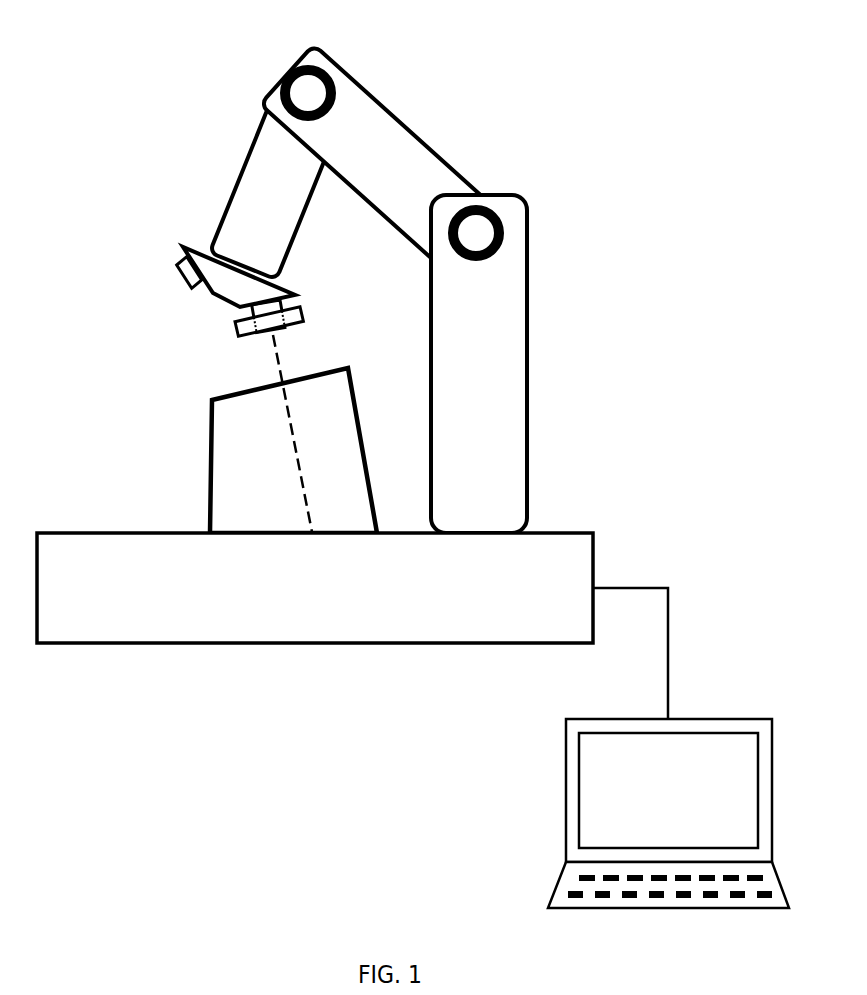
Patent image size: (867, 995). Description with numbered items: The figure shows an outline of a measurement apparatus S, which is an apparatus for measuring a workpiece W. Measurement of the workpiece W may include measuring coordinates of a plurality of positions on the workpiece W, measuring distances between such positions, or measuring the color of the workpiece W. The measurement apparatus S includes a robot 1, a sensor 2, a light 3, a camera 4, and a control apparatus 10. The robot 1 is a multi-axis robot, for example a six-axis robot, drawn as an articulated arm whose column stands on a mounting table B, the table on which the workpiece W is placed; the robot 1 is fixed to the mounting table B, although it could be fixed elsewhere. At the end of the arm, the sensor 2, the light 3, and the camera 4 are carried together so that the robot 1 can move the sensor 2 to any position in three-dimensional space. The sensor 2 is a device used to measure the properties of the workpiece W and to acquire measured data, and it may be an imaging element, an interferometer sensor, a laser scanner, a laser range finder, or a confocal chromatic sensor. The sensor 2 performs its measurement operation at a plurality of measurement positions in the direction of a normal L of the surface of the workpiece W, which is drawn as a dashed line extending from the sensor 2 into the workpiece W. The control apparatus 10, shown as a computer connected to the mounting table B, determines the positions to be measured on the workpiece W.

The measurement apparatus S is at (42, 34).
The robot 1 is at (437, 100).
The sensor 2 is at (282, 300).
The light 3 is at (235, 333).
The camera 4 is at (182, 276).
The normal L is at (278, 352).
The workpiece W is at (210, 418).
The mounting table B is at (563, 533).
The control apparatus 10 is at (713, 718).